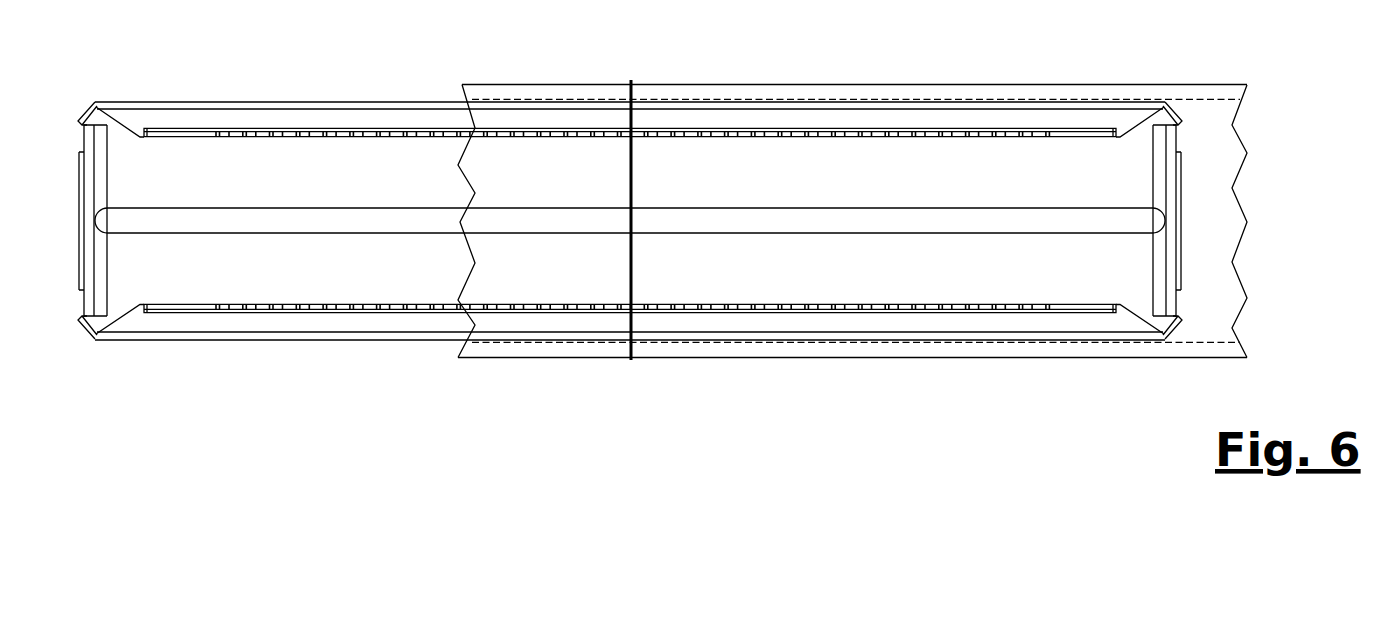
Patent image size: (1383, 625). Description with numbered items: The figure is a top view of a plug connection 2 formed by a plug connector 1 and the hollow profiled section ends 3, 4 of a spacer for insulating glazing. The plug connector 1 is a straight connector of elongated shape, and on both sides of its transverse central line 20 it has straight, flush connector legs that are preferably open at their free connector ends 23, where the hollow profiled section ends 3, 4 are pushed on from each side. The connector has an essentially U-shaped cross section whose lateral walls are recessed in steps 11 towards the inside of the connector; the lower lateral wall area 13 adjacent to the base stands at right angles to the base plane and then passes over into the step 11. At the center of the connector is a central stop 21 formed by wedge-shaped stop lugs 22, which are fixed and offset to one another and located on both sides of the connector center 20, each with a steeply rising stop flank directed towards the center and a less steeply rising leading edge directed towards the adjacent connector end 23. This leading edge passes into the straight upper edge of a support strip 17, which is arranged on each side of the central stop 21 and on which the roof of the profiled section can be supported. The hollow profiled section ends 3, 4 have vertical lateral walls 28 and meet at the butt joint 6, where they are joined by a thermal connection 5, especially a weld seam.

The plug connector 1 is at (255, 360).
The plug connection 2 is at (570, 360).
The hollow profiled section end 3 is at (705, 345).
The hollow profiled section end 4 is at (508, 345).
The thermal connection 5 is at (629, 321).
The butt joint 6 is at (688, 243).
The step 11 is at (350, 322).
The lower lateral wall area 13 is at (422, 341).
The support strip 17 is at (703, 133).
The transverse central line 20 is at (688, 182).
The central stop 21 is at (638, 123).
The stop lug 22 is at (652, 133).
The connector end 23 is at (1198, 180).
The lateral wall 28 is at (553, 88).